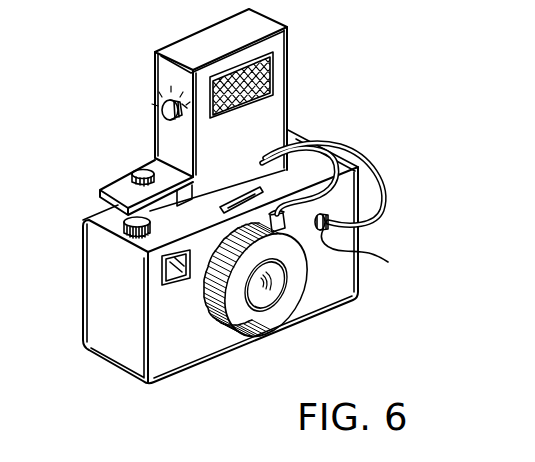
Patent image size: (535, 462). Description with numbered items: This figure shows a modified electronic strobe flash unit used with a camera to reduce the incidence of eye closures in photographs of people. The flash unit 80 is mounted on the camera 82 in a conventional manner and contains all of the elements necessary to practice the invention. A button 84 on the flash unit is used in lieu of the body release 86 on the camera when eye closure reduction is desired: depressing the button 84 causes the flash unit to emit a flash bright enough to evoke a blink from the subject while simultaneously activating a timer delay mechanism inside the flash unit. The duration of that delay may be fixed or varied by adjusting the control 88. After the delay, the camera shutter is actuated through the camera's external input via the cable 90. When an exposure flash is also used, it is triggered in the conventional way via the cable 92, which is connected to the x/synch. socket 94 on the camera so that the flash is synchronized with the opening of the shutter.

The flash unit 80 is at (318, 80).
The camera 82 is at (386, 146).
The button 84 is at (140, 170).
The body release 86 is at (123, 232).
The control 88 is at (166, 107).
The cable 90 is at (320, 156).
The cable 92 is at (384, 207).
The x/synch. socket 94 is at (372, 252).